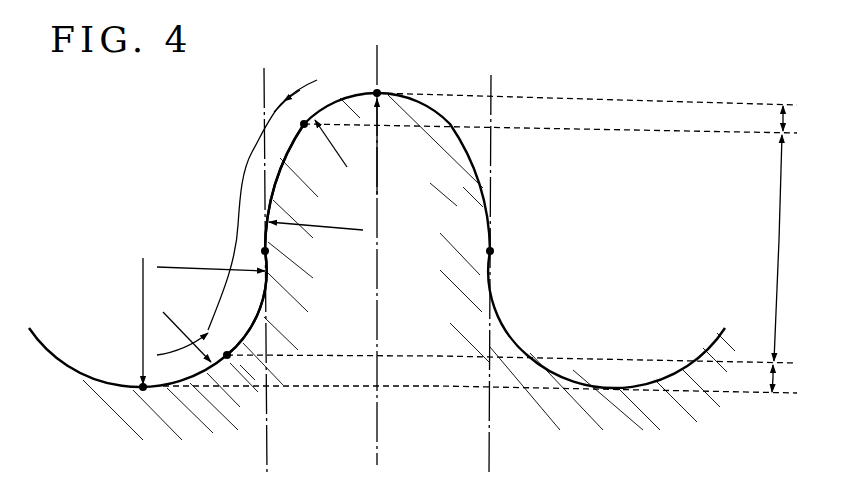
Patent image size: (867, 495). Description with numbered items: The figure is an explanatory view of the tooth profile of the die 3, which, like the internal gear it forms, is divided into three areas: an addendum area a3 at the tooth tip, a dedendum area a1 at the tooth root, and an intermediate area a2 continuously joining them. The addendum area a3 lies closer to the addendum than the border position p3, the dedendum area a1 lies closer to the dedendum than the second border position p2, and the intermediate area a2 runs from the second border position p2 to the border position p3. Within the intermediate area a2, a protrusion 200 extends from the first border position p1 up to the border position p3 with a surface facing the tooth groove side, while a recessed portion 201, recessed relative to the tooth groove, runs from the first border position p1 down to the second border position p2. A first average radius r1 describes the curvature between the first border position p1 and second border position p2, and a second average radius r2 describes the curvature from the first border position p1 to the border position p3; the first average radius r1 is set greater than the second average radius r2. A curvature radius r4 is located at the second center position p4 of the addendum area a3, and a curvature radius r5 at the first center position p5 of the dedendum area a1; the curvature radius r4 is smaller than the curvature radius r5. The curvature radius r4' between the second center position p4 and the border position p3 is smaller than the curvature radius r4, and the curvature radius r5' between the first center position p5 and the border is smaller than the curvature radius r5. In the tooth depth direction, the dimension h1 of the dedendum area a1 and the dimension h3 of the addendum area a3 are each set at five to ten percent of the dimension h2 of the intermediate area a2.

The die 3 is at (480, 185).
The protrusion 200 is at (278, 170).
The recessed portion 201 is at (268, 306).
The first border position p1 is at (267, 251).
The second border position p2 is at (227, 357).
The border position p3 is at (305, 123).
The second center position p4 is at (378, 92).
The first center position p5 is at (143, 388).
The first average radius r1 is at (211, 258).
The second average radius r2 is at (330, 227).
The curvature radius r4 is at (397, 147).
The curvature radius r4' is at (345, 143).
The curvature radius r5 is at (114, 321).
The curvature radius r5' is at (187, 322).
The dedendum area a1 is at (173, 352).
The intermediate area a2 is at (230, 213).
The addendum area a3 is at (285, 101).
The dimension of the dedendum area h1 is at (788, 378).
The dimension of the intermediate area h2 is at (790, 248).
The dimension of the addendum area h3 is at (797, 118).